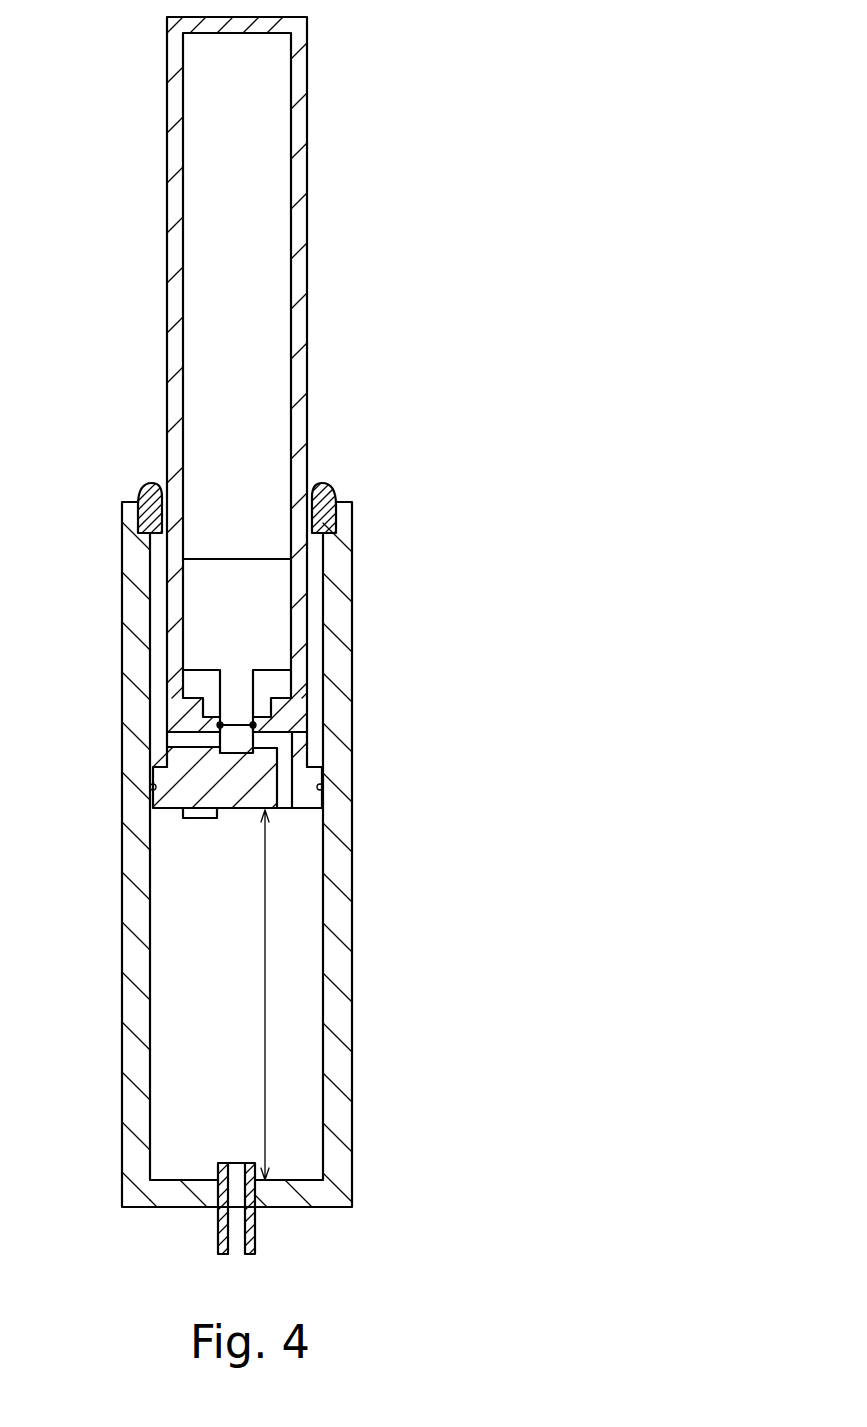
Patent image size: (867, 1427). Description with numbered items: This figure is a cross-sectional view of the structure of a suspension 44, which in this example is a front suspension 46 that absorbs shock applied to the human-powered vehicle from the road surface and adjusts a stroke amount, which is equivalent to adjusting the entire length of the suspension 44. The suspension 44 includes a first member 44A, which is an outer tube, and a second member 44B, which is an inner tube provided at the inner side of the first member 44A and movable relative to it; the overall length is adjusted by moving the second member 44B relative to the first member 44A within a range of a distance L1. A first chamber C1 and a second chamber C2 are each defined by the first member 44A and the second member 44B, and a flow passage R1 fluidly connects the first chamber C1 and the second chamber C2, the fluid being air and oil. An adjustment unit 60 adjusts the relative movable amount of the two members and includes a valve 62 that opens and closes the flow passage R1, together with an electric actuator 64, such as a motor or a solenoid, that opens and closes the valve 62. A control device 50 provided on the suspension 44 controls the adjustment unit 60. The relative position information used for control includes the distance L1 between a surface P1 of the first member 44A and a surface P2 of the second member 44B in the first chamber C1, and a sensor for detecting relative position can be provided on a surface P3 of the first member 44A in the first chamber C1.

The front suspension 46 is at (295, 635).
The suspension 44 is at (295, 635).
The first member 44A is at (286, 878).
The second member 44B is at (307, 342).
The control device 50 is at (197, 820).
The adjustment unit 60 is at (337, 697).
The valve 62 is at (255, 745).
The electric actuator 64 is at (300, 593).
The first chamber C1 is at (290, 1048).
The second chamber C2 is at (157, 670).
The surface of the first member P1 is at (305, 1180).
The surface of the second member P2 is at (298, 817).
The surface of the first member P3 is at (153, 886).
The flow passage R1 is at (298, 774).
The distance L1 is at (263, 993).